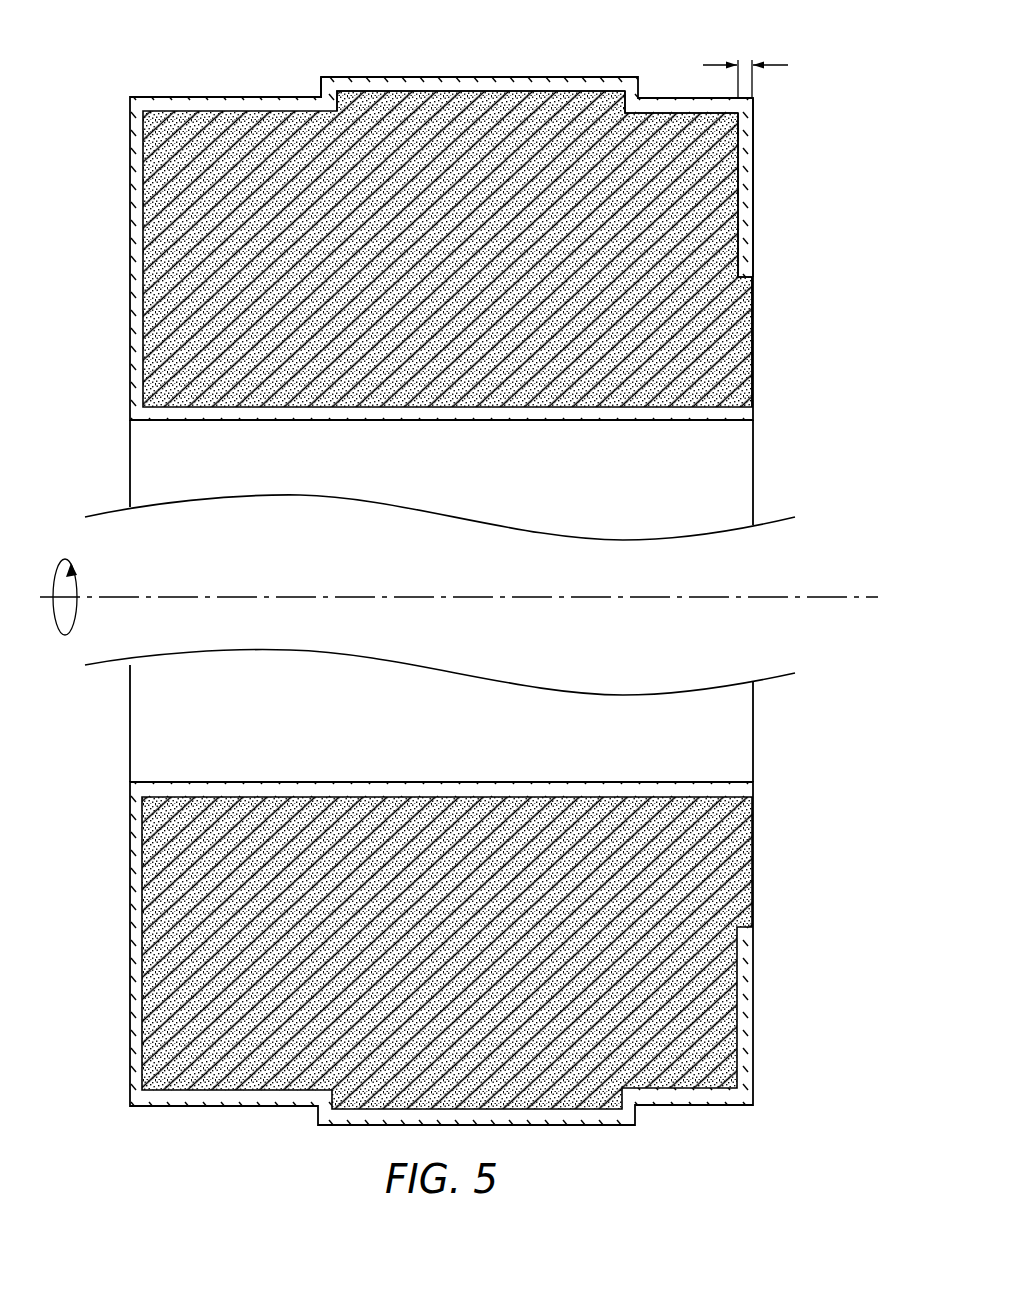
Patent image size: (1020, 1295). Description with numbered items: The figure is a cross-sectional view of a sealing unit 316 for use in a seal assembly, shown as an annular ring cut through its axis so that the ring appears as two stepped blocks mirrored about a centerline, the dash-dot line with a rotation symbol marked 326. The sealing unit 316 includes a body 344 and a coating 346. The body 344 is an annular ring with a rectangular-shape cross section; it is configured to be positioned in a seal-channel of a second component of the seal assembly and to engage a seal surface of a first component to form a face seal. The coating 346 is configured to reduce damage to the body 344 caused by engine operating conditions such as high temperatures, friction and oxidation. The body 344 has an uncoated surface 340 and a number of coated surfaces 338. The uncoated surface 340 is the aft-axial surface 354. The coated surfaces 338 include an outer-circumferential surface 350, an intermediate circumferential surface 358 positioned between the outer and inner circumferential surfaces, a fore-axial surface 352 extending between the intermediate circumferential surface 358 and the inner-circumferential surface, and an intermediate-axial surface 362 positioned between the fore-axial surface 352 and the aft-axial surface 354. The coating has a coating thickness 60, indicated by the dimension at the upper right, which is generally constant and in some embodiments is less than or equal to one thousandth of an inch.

The sealing unit 316 is at (157, 50).
The axis of rotation 326 is at (145, 593).
The coated surfaces 338 is at (437, 410).
The uncoated surface 340 is at (753, 338).
The body 344 is at (602, 118).
The coating 346 is at (438, 88).
The outer-circumferential surface 350 is at (375, 91).
The fore-axial surface 352 is at (156, 262).
The aft-axial surface 354 is at (752, 303).
The intermediate circumferential surface 358 is at (240, 110).
The intermediate-axial surface 362 is at (740, 180).
The coating thickness 60 is at (788, 66).